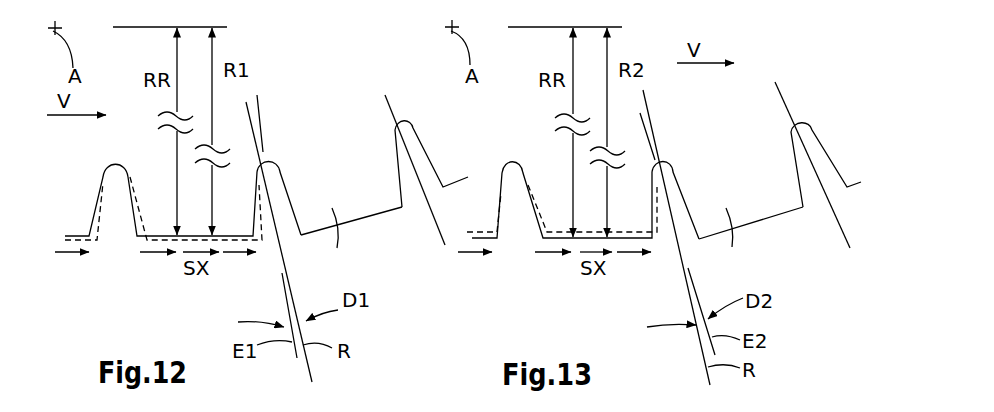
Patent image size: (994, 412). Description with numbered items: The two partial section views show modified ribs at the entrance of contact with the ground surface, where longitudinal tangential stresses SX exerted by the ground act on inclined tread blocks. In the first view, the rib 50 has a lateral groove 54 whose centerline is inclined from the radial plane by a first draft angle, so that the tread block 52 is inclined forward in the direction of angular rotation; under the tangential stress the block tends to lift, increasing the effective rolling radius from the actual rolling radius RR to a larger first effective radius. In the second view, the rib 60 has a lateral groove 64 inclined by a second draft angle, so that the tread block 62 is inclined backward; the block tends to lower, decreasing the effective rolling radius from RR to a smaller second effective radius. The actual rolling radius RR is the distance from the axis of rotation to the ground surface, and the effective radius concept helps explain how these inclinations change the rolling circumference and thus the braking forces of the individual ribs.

In FIG. 12, the rib 50 is at (366, 224).
In FIG. 12, the tread block 52 is at (330, 244).
In FIG. 12, the lateral groove 54 is at (405, 183).
In FIG. 13, the rib 60 is at (761, 226).
In FIG. 13, the tread block 62 is at (729, 244).
In FIG. 13, the lateral groove 64 is at (803, 185).